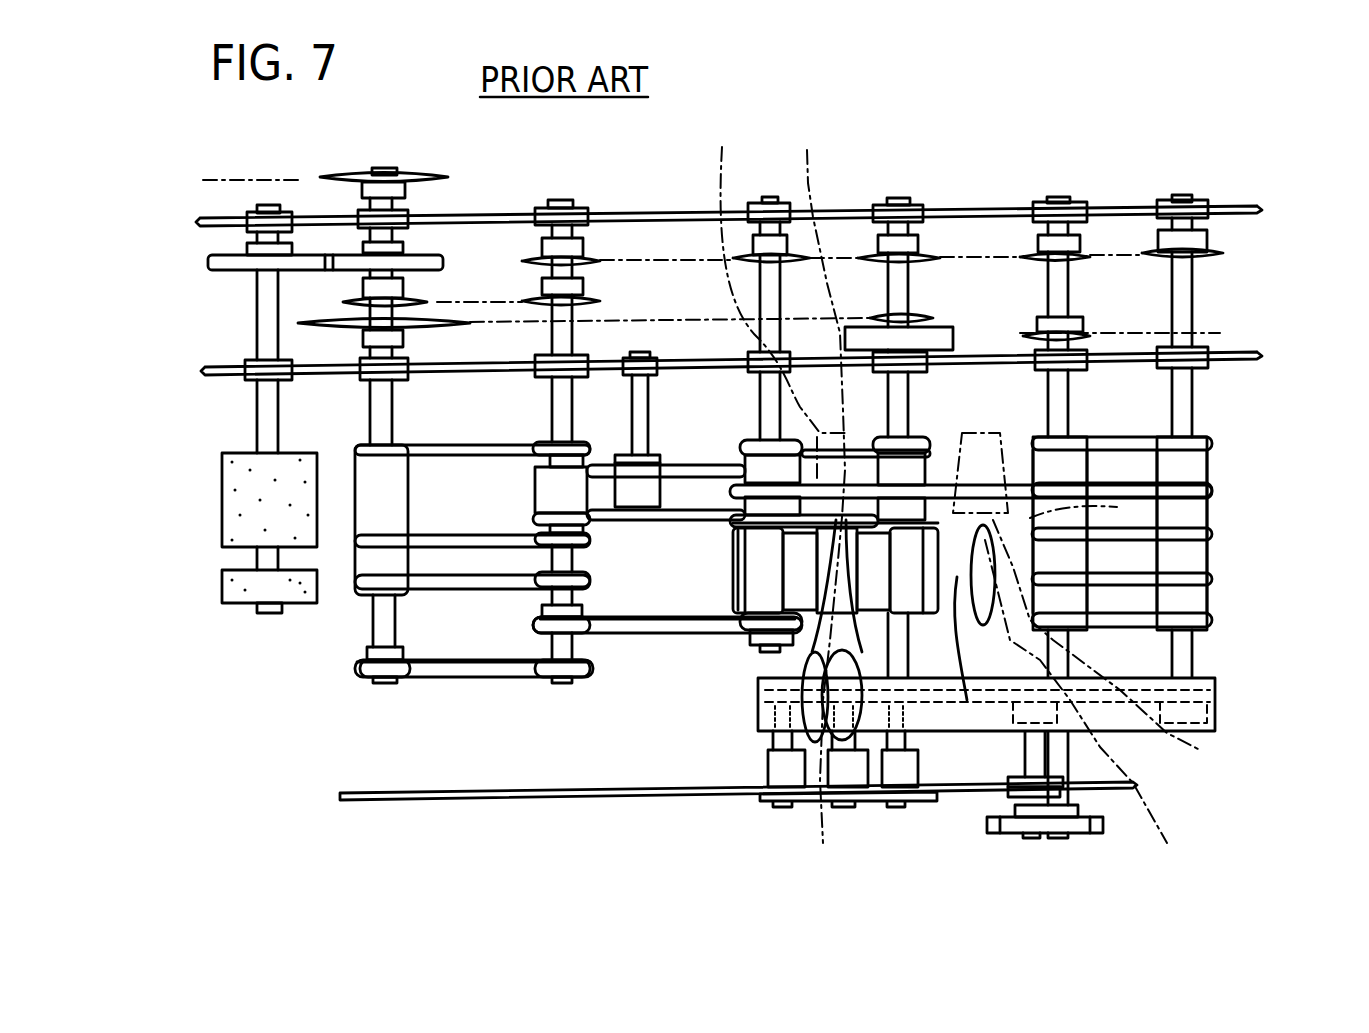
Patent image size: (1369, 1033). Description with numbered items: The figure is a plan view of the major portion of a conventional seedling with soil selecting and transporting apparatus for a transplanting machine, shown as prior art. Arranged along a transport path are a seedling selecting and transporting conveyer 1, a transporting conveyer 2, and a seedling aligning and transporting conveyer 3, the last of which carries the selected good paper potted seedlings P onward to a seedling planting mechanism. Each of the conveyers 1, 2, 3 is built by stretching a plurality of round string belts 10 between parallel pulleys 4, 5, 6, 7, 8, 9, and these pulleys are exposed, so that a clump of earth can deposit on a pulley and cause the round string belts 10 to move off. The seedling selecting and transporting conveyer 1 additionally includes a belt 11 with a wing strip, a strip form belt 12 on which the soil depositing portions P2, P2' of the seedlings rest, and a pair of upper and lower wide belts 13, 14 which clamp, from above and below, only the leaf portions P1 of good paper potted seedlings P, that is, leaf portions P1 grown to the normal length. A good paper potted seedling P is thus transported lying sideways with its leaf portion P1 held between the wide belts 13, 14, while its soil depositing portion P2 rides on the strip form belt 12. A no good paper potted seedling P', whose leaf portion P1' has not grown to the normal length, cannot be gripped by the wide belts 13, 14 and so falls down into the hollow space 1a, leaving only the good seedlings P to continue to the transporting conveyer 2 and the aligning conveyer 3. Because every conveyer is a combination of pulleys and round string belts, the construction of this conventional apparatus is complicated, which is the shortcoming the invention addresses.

The seedling selecting and transporting conveyer 1 is at (959, 414).
The hollow space 1a is at (967, 700).
The transporting conveyer 2 is at (667, 667).
The seedling aligning and transporting conveyer 3 is at (458, 634).
The pulley 4 is at (1185, 477).
The pulley 5 is at (1065, 468).
The pulley 6 is at (900, 467).
The pulley 7 is at (757, 458).
The pulley 8 is at (553, 487).
The pulley 9 is at (394, 467).
The round string belts 10 is at (1110, 443).
The belt with a wing strip 11 is at (737, 563).
The strip form belt 12 is at (990, 433).
The wide belt 13 is at (952, 727).
The wide belt 14 is at (763, 717).
The good paper potted seedling P is at (820, 310).
The leaf portion P1 is at (828, 701).
The soil depositing portion P2 is at (776, 294).
The no good paper potted seedling P' is at (1135, 640).
The leaf portion P1' is at (1091, 714).
The soil depositing portion P2' is at (1174, 540).